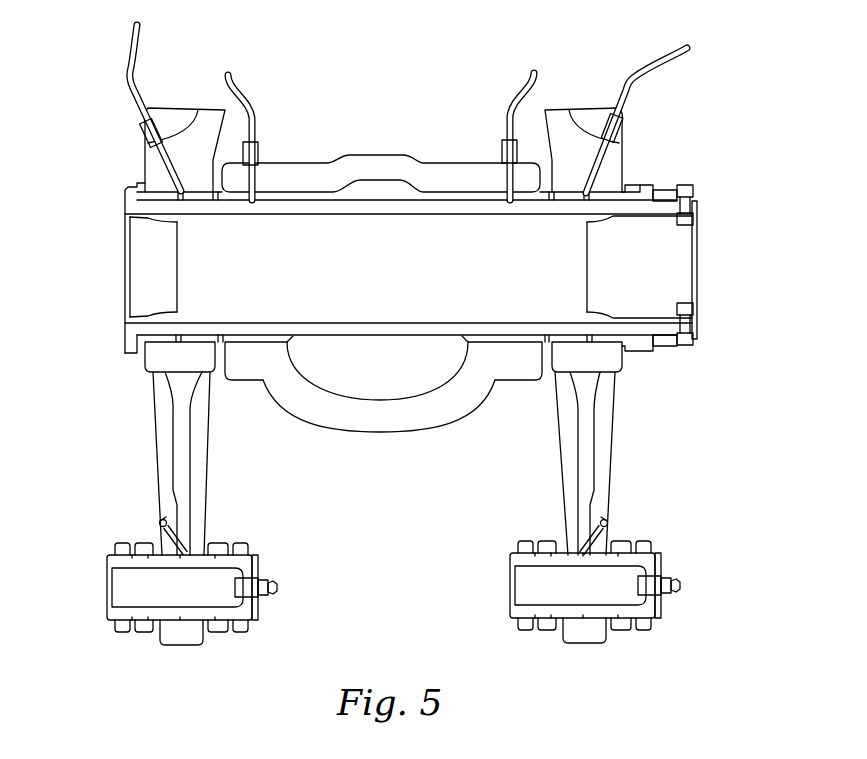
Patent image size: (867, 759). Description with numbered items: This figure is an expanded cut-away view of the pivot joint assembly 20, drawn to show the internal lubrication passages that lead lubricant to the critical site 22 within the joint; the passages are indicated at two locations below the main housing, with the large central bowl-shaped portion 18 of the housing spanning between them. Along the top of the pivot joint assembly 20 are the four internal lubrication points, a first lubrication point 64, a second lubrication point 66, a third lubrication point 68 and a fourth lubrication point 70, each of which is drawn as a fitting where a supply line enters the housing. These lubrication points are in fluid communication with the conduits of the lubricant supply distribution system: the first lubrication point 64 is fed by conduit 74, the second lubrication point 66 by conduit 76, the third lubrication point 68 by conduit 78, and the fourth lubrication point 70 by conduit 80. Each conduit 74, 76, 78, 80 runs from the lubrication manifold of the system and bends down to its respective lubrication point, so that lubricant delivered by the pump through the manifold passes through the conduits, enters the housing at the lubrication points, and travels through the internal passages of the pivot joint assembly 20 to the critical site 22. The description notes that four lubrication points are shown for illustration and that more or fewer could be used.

The pivot joint assembly 20 is at (700, 250).
The differential bowl 18 is at (381, 433).
The critical site 22 is at (253, 342).
The conduit 80 is at (127, 73).
The conduit 78 is at (253, 107).
The conduit 76 is at (508, 105).
The conduit 74 is at (653, 75).
The fourth lubrication point 70 is at (143, 133).
The third lubrication point 68 is at (259, 152).
The second lubrication point 66 is at (501, 150).
The first lubrication point 64 is at (624, 130).